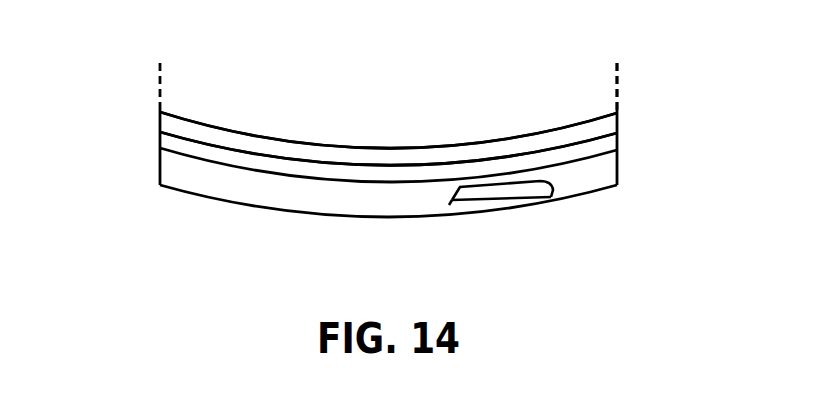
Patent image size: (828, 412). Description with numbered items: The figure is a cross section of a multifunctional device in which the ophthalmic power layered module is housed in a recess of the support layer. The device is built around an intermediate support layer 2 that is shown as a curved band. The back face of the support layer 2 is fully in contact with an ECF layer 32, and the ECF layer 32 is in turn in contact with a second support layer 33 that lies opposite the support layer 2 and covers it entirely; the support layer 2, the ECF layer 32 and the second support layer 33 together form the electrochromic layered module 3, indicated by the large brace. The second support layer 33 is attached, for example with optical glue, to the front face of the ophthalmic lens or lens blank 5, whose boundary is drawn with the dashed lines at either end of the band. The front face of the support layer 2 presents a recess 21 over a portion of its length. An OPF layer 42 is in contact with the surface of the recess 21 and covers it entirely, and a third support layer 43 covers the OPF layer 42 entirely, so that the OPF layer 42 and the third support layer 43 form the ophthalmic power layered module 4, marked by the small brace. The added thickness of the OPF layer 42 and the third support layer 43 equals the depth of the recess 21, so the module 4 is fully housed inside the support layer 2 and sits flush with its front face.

The support layer 2 is at (158, 177).
The electrochromic layered module 3 is at (630, 113).
The ophthalmic power layered module 4 is at (557, 172).
The ophthalmic substrate 5 is at (587, 93).
The recess 21 is at (515, 185).
The ECF layer 32 is at (158, 140).
The second support layer 33 is at (158, 118).
The OPF layer 42 is at (449, 204).
The third support layer 43 is at (483, 207).